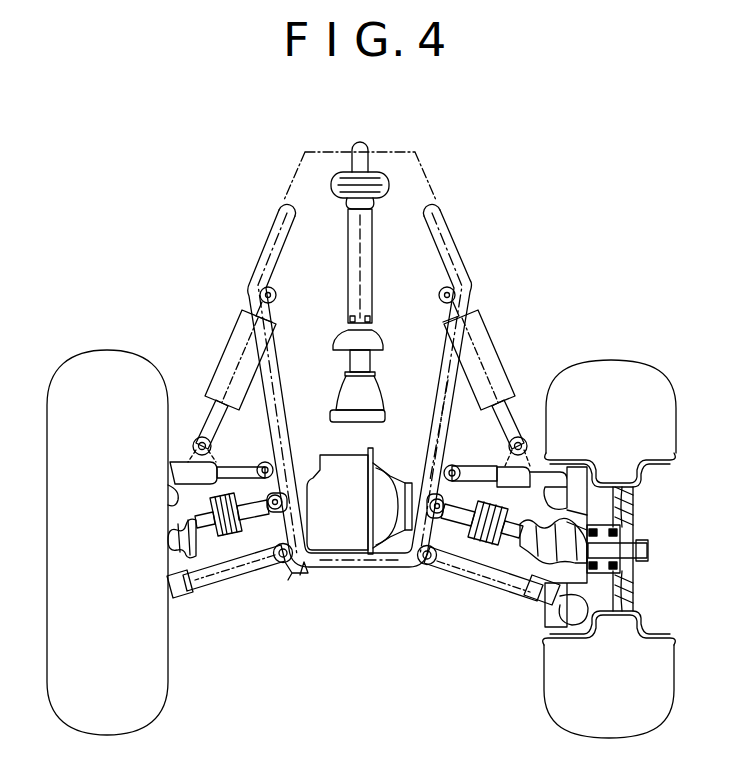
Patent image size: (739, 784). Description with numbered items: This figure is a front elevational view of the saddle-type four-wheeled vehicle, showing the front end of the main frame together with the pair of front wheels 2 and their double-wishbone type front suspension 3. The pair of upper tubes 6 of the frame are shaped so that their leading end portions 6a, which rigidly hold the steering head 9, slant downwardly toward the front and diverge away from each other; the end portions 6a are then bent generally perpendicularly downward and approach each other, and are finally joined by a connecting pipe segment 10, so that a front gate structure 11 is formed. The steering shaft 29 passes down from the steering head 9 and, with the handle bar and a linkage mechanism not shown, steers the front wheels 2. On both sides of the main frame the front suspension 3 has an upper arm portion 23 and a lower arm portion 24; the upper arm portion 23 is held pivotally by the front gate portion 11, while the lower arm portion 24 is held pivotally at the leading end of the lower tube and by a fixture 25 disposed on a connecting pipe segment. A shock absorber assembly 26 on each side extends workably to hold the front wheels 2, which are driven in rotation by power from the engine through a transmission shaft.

The front wheels 2 is at (170, 695).
The front suspension 3 is at (248, 578).
The upper tubes 6 is at (450, 252).
The leading end portions 6a is at (462, 303).
The steering head 9 is at (390, 186).
The connecting pipe segment 10 is at (363, 567).
The front gate structure 11 is at (435, 402).
The upper arm portion 23 is at (507, 531).
The lower arm portion 24 is at (474, 580).
The fixture 25 is at (301, 575).
The shock absorber assembly 26 is at (483, 370).
The steering shaft 29 is at (363, 291).